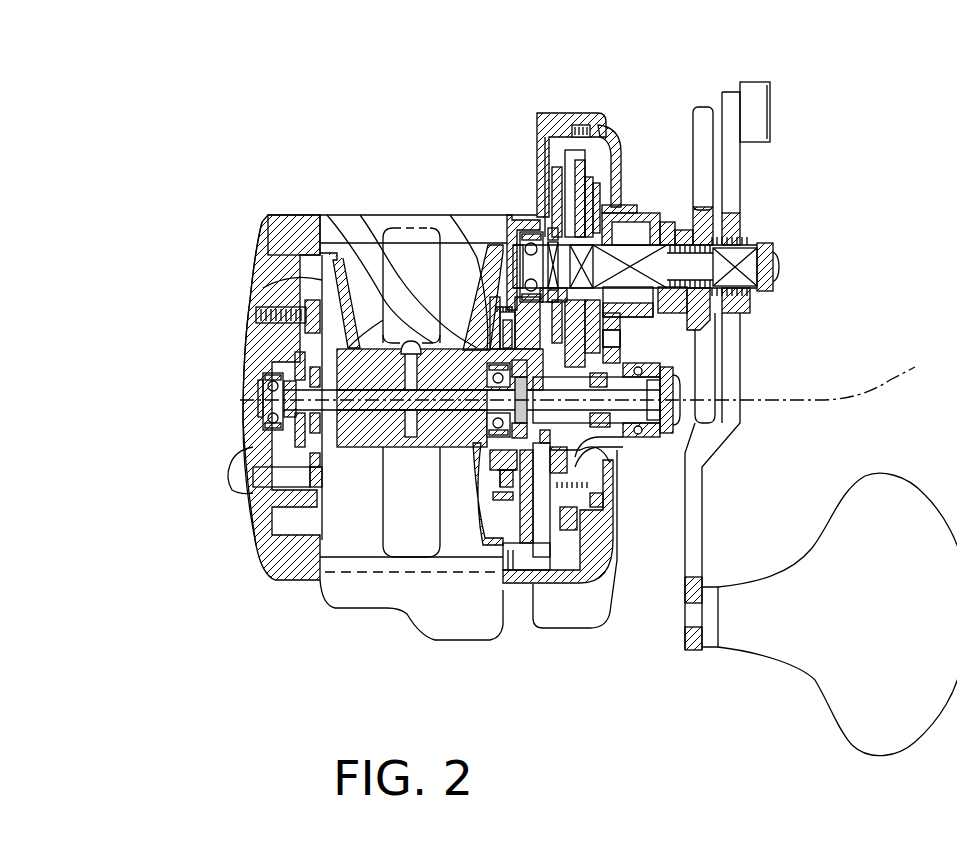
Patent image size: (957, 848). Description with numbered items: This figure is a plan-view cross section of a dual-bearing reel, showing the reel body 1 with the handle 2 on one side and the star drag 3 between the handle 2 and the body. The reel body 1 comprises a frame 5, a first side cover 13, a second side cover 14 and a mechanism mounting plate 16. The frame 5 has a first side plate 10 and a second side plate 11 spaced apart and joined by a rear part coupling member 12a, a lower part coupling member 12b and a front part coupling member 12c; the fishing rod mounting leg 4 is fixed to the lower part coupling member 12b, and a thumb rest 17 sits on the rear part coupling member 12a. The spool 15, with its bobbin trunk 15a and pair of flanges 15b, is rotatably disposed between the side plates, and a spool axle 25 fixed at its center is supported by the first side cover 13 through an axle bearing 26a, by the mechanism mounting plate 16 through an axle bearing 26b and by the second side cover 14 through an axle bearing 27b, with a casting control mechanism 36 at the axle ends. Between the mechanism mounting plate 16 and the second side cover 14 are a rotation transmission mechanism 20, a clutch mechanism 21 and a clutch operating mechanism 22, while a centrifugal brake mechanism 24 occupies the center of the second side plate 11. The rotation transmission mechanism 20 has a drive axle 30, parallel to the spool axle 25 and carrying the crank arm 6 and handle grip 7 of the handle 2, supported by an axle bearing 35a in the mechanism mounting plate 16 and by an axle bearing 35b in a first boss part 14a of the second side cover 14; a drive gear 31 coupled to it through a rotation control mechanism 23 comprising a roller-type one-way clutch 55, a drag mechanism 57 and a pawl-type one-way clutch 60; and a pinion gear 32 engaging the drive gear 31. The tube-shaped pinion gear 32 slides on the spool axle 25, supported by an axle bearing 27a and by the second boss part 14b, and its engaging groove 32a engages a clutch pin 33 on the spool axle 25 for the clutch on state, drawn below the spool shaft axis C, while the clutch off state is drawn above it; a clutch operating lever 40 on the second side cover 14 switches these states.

The reel body 1 is at (540, 105).
The handle 2 is at (772, 148).
The star drag 3 is at (705, 122).
The fishing rod mounting leg 4 is at (420, 540).
The frame 5 is at (383, 190).
The crank arm 6 is at (745, 205).
The handle grip 7 is at (877, 473).
The first side plate 10 is at (268, 218).
The second side plate 11 is at (527, 213).
The rear part coupling member 12a is at (420, 440).
The lower part coupling member 12b is at (383, 460).
The front part coupling member 12c is at (295, 210).
The first side cover 13 is at (262, 222).
The second side cover 14 is at (565, 588).
The first boss part 14a is at (655, 322).
The second boss part 14b is at (660, 387).
The spool 15 is at (437, 455).
The bobbin trunk 15a is at (395, 540).
The flanges 15b is at (258, 308).
The mechanism mounting plate 16 is at (556, 127).
The thumb rest 17 is at (322, 592).
The rotation transmission mechanism 20 is at (660, 330).
The clutch mechanism 21 is at (513, 600).
The clutch operating mechanism 22 is at (612, 427).
The rotation control mechanism 23 is at (600, 158).
The centrifugal brake mechanism 24 is at (482, 300).
The spool axle 25 is at (270, 400).
The axle bearing 26a is at (265, 382).
The axle bearing 26b is at (487, 540).
The axle bearing 27a is at (375, 215).
The axle bearing 27b is at (668, 440).
The drive axle 30 is at (609, 240).
The drive gear 31 is at (560, 165).
The pinion gear 32 is at (668, 415).
The engaging groove 32a is at (512, 283).
The clutch pin 33 is at (345, 213).
The axle bearing 35a is at (604, 172).
The axle bearing 35b is at (742, 226).
The casting control mechanism 36 is at (690, 418).
The clutch operating lever 40 is at (592, 610).
The roller-type one-way clutch 55 is at (682, 200).
The drag mechanism 57 is at (643, 200).
The pawl-type one-way clutch 60 is at (545, 100).
The spool shaft axis C is at (591, 368).